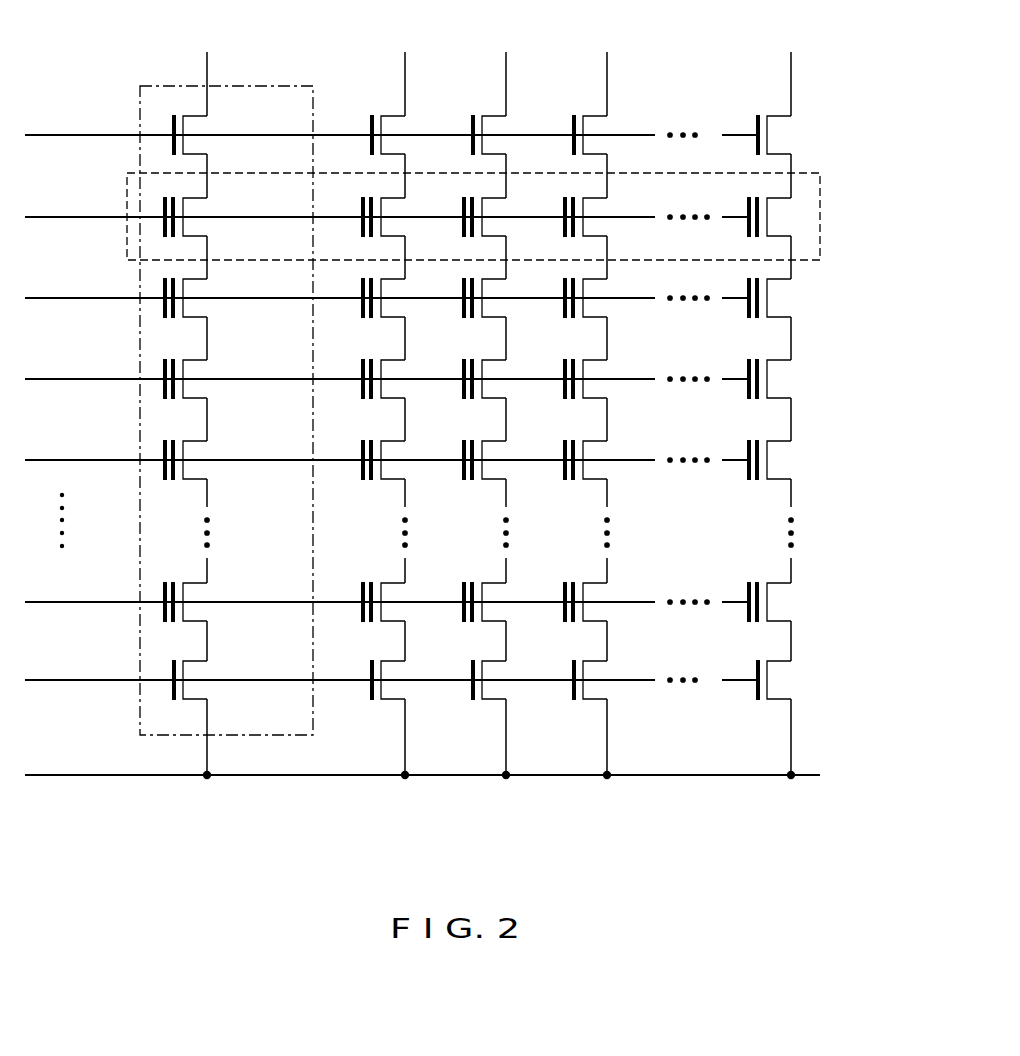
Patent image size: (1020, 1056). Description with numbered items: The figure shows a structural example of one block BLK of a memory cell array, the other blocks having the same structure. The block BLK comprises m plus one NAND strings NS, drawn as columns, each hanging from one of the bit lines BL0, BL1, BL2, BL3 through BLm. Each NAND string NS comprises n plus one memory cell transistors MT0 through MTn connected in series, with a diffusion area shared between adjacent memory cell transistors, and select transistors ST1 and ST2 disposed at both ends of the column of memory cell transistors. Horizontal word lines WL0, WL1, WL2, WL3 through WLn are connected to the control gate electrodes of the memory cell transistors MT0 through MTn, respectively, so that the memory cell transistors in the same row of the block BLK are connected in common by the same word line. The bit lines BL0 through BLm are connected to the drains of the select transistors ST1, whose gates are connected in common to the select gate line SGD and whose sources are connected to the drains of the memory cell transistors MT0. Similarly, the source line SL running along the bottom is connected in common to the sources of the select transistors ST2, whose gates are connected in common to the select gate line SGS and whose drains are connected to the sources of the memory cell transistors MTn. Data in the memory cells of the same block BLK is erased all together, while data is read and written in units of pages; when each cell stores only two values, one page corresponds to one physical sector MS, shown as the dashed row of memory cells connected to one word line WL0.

The NAND string NS is at (155, 84).
The bit line BL0 is at (207, 397).
The bit line BL1 is at (405, 397).
The bit line BL2 is at (506, 397).
The bit line BL3 is at (607, 397).
The bit line BLm is at (790, 397).
The select gate line SGD is at (391, 120).
The word line WL0 is at (387, 202).
The word line WL1 is at (387, 283).
The word line WL2 is at (387, 364).
The word line WL3 is at (387, 445).
The word line WLn is at (387, 586).
The select gate line SGS is at (391, 665).
The source line SL is at (422, 759).
The select transistor ST1 is at (203, 127).
The memory cell transistor MT0 is at (203, 210).
The memory cell transistor MTn is at (203, 595).
The select transistor ST2 is at (203, 675).
The physical sector MS is at (820, 195).
The block BLK is at (828, 755).